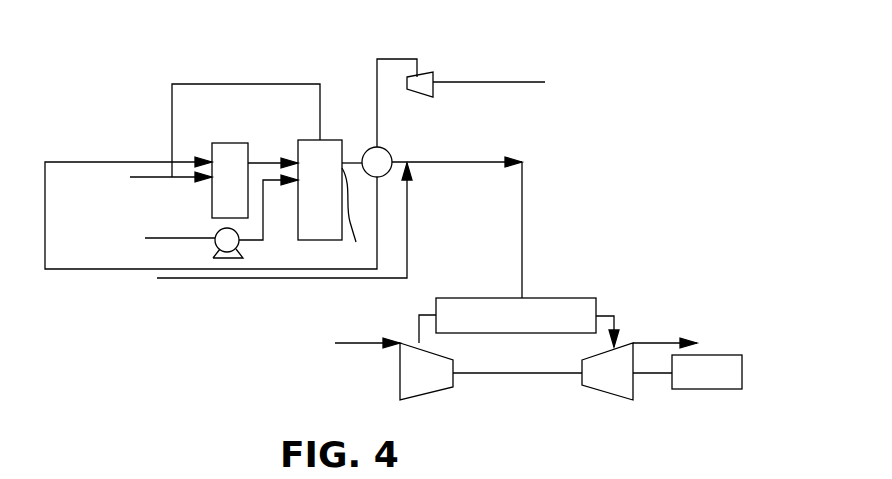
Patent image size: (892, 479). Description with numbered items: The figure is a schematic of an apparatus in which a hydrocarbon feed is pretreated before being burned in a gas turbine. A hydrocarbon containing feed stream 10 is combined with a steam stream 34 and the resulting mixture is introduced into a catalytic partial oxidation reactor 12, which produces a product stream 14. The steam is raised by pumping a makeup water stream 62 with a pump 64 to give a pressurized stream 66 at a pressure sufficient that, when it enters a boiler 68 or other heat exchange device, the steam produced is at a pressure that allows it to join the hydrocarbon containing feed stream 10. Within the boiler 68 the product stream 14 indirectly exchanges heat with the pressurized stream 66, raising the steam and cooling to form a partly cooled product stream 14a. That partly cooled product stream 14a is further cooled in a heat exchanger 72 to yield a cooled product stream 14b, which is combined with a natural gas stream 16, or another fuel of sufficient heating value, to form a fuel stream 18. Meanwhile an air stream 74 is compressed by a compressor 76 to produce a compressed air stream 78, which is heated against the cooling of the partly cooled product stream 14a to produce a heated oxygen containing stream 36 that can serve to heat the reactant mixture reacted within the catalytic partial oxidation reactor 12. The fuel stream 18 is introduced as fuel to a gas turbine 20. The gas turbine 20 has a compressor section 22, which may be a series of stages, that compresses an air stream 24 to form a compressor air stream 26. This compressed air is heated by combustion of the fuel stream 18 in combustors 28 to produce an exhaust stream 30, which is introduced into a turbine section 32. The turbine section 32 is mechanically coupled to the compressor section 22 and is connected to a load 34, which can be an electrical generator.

The hydrocarbon containing feed stream 10 is at (143, 176).
The catalytic partial oxidation reactor 12 is at (228, 143).
The product stream 14 is at (272, 162).
The partly cooled product stream 14a is at (348, 217).
The cooled product stream 14b is at (400, 160).
The natural gas stream 16 is at (407, 242).
The fuel stream 18 is at (522, 183).
The gas turbine 20 is at (615, 262).
The compressor section 22 is at (438, 378).
The air stream 24 is at (362, 345).
The compressor air stream 26 is at (425, 314).
The combustors 28 is at (538, 298).
The exhaust stream 30 is at (614, 320).
The turbine section 32 is at (601, 375).
The steam stream 34 is at (690, 389).
The oxygen containing stream 36 is at (120, 270).
The makeup water stream 62 is at (185, 238).
The pump 64 is at (242, 243).
The pressurized stream 66 is at (266, 234).
The boiler 68 is at (335, 140).
The heat exchanger 72 is at (384, 150).
The air stream 74 is at (465, 82).
The compressor 76 is at (425, 72).
The compressed air stream 78 is at (380, 59).